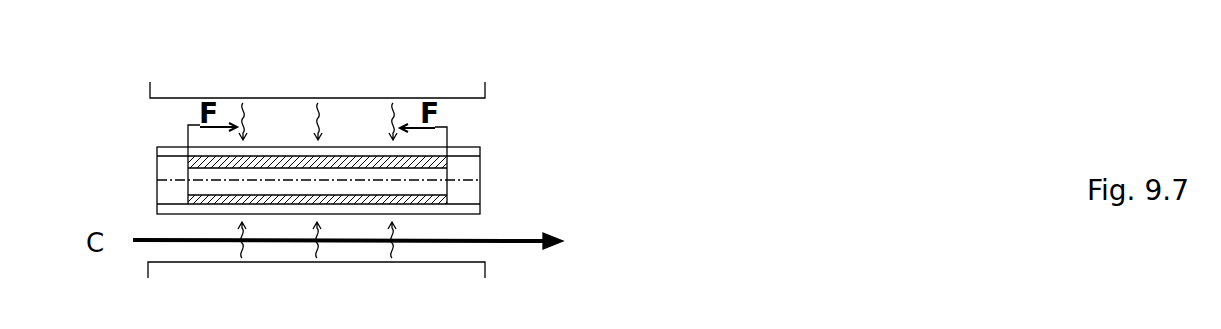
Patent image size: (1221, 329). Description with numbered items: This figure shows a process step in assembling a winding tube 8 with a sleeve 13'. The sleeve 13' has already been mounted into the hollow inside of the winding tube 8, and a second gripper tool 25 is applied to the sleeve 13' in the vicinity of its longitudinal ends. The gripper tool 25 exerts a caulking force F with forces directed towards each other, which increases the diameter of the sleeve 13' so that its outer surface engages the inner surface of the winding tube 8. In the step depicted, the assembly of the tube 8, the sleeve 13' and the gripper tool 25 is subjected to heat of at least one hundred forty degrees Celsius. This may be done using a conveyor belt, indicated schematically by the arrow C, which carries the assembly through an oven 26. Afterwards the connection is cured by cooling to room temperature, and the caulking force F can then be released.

The winding tube 8 is at (295, 152).
The second sleeve 13' is at (317, 115).
The second gripper tool 25 is at (186, 136).
The oven 26 is at (327, 302).